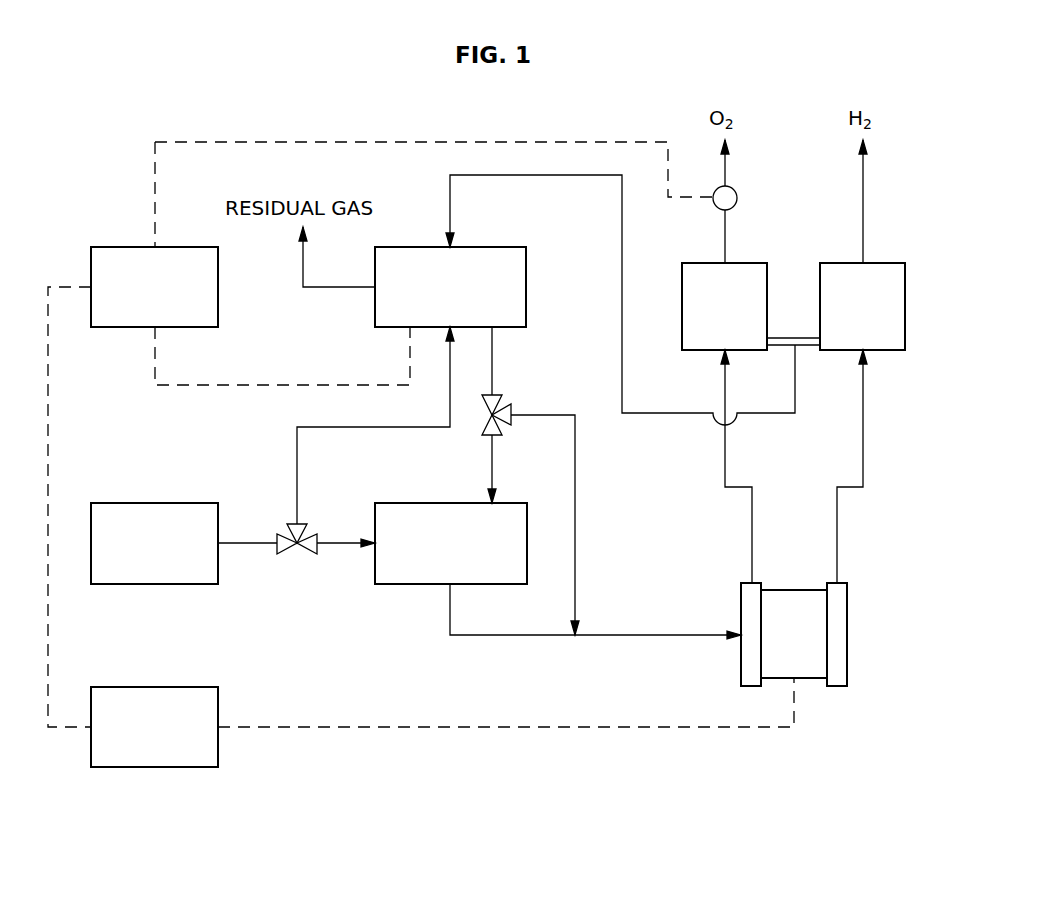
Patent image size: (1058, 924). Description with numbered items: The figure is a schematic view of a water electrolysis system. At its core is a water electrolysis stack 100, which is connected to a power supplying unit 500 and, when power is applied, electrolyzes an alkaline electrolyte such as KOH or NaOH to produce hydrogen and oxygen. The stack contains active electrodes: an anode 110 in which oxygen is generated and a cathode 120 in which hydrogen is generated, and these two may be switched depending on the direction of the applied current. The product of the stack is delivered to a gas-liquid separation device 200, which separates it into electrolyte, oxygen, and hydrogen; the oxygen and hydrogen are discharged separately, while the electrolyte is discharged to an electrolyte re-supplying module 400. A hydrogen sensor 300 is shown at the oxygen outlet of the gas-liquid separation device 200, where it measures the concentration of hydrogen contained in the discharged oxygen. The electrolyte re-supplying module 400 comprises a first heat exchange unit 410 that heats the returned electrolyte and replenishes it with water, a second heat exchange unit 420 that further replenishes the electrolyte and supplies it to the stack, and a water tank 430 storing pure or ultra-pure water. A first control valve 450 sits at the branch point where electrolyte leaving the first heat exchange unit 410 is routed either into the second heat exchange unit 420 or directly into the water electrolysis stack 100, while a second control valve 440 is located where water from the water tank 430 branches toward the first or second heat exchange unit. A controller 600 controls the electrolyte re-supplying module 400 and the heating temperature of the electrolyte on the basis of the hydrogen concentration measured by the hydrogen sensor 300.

The water electrolysis stack 100 is at (796, 680).
The anode 110 is at (741, 665).
The cathode 120 is at (847, 635).
The gas-liquid separation device 200 is at (890, 263).
The hydrogen sensor 300 is at (735, 192).
The electrolyte re-supplying module 400 is at (381, 571).
The first heat exchange unit 410 is at (375, 320).
The second heat exchange unit 420 is at (398, 584).
The water tank 430 is at (131, 503).
The second control valve 440 is at (285, 552).
The first control valve 450 is at (500, 398).
The power supplying unit 500 is at (157, 767).
The controller 600 is at (109, 247).